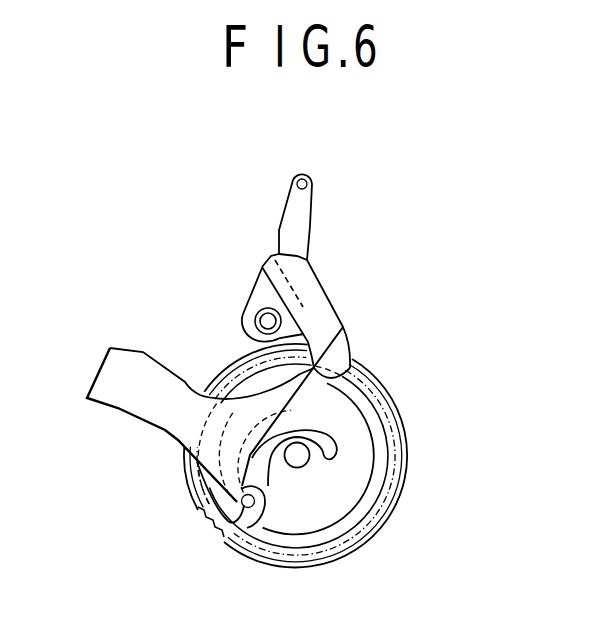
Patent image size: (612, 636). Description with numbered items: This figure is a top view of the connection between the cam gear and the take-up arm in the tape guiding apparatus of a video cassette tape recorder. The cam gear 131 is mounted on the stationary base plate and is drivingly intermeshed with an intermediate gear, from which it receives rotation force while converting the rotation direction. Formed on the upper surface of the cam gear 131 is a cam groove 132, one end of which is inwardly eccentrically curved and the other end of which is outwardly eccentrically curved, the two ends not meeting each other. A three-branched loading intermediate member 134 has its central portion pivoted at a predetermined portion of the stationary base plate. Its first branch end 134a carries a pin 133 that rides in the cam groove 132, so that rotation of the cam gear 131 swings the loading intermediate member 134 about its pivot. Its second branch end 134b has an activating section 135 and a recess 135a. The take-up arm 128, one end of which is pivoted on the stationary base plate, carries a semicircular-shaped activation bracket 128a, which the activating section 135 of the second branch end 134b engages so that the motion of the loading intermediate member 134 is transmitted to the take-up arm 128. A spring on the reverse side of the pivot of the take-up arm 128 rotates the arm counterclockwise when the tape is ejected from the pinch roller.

The take-up arm 128 is at (308, 212).
The activation bracket 128a is at (245, 317).
The cam gear 131 is at (404, 467).
The cam groove 132 is at (333, 436).
The pin 133 is at (257, 513).
The three-branched loading intermediate member 134 is at (120, 411).
The first branch end 134a is at (246, 502).
The second branch end 134b is at (303, 288).
The activating section 135 is at (253, 350).
The recess 135a is at (340, 325).